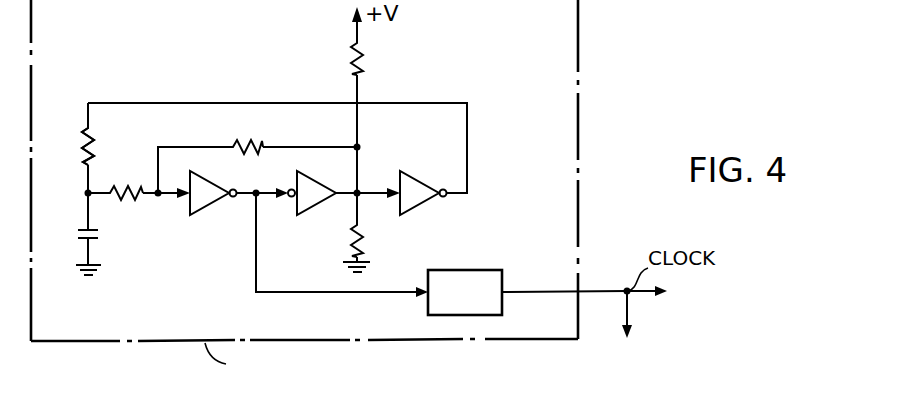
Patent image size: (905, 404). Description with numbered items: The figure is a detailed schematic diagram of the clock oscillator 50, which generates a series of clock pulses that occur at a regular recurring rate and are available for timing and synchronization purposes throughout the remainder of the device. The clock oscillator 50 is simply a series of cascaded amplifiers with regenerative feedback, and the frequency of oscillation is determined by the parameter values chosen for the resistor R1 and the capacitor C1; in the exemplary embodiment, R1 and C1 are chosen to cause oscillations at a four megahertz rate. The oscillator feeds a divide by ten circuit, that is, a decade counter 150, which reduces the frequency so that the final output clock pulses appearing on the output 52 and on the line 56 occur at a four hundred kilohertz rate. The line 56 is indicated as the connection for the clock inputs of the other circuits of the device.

The clock oscillator 50 is at (580, 113).
The output 52 is at (596, 290).
The line 56 is at (632, 314).
The divide by 10 circuit 150 is at (478, 270).
The resistor R1 is at (80, 140).
The capacitor C1 is at (78, 233).